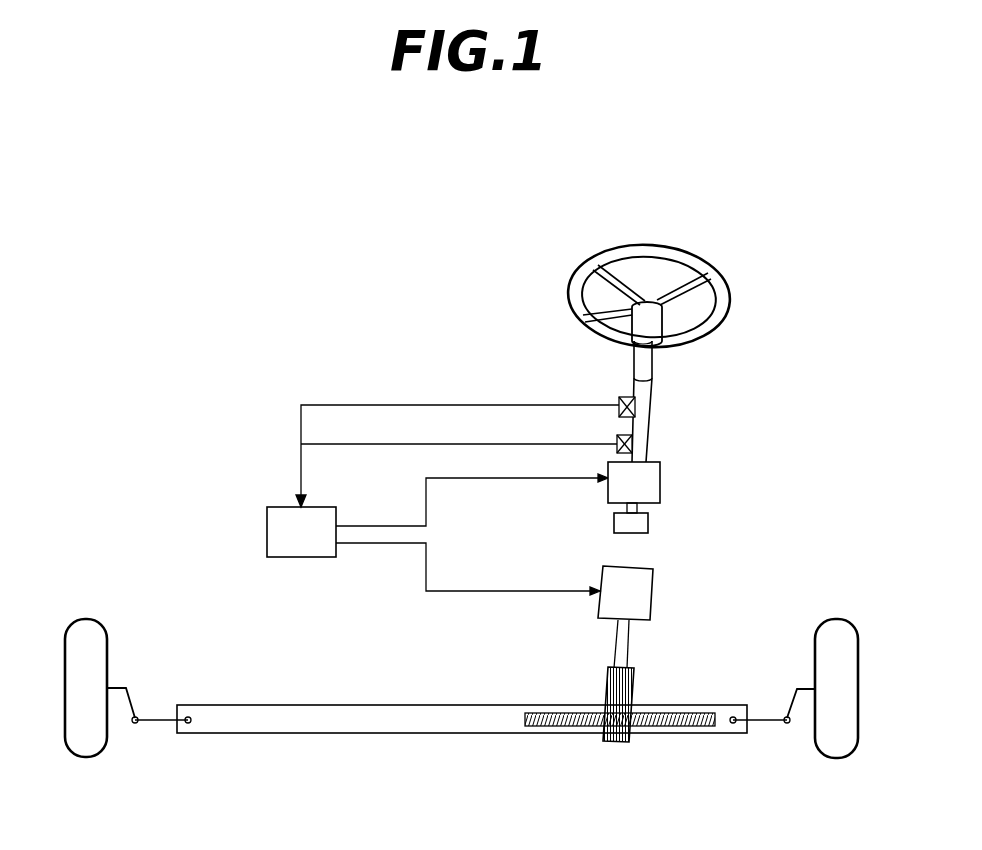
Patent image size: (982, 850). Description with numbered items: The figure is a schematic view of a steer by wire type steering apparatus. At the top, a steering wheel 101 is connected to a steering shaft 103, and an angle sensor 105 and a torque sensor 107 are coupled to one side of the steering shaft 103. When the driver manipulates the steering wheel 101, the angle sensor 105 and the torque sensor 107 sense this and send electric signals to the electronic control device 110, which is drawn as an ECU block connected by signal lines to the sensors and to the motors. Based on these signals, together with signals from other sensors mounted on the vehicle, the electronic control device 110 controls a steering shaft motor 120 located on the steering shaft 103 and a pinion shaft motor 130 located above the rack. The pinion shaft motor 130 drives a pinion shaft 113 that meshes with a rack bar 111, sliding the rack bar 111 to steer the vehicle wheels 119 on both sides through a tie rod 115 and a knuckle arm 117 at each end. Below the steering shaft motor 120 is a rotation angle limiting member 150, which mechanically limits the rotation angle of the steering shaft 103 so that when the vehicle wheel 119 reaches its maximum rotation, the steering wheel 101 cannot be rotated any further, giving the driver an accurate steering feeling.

The steering wheel 101 is at (722, 300).
The steering shaft 103 is at (645, 420).
The angle sensor 105 is at (620, 398).
The torque sensor 107 is at (617, 437).
The electronic control device 110 is at (267, 533).
The rack bar 111 is at (380, 723).
The pinion shaft 113 is at (638, 683).
The tie rod 115 is at (150, 728).
The knuckle arm 117 is at (135, 700).
The vehicle wheel 119 is at (107, 645).
The steering shaft motor 120 is at (655, 485).
The pinion shaft motor 130 is at (648, 580).
The rotation angle limiting member 150 is at (640, 525).